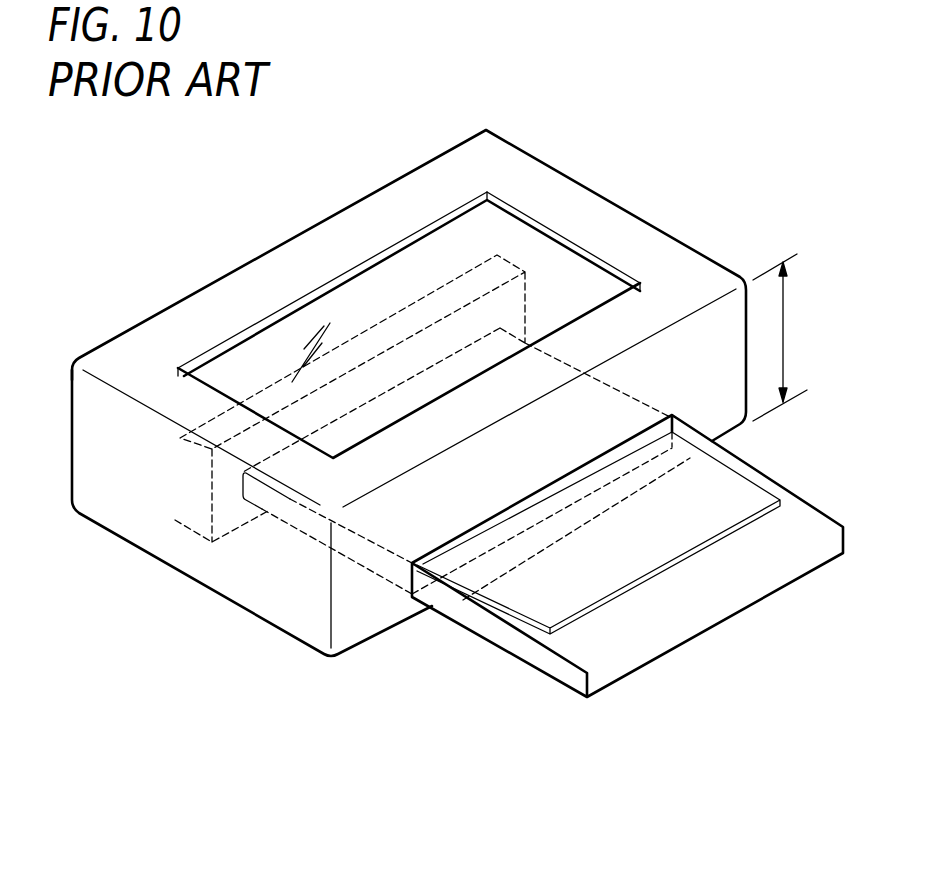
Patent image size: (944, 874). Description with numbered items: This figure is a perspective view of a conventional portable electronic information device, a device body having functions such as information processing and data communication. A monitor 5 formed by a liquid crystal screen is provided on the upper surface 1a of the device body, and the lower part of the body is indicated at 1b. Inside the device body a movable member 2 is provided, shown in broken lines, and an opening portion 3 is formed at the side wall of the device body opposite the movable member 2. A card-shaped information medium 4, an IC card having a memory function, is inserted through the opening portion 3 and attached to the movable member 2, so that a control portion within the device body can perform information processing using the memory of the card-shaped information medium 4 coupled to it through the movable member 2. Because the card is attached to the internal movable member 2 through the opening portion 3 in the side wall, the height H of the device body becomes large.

The upper surface 1a is at (588, 180).
The lower housing 1b is at (293, 635).
The movable member 2 is at (224, 519).
The opening portion 3 is at (408, 583).
The card-shaped information medium 4 is at (673, 633).
The monitor 5 is at (239, 362).
The height H is at (784, 337).